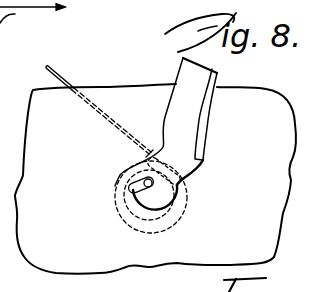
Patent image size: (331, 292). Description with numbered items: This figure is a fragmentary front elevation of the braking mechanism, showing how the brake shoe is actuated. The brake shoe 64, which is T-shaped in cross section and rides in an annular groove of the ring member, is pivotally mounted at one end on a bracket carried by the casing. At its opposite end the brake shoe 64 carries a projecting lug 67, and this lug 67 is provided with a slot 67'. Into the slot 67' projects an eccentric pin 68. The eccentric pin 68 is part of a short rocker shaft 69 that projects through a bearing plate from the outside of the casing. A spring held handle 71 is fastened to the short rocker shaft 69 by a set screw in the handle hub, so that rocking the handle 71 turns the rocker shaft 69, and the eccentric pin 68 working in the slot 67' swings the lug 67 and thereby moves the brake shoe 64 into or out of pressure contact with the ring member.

The brake shoe 64 is at (202, 113).
The projecting lug 67 is at (117, 182).
The slot 67' is at (130, 200).
The eccentric pin 68 is at (152, 183).
The short rocker shaft 69 is at (172, 214).
The spring held handle 71 is at (71, 55).